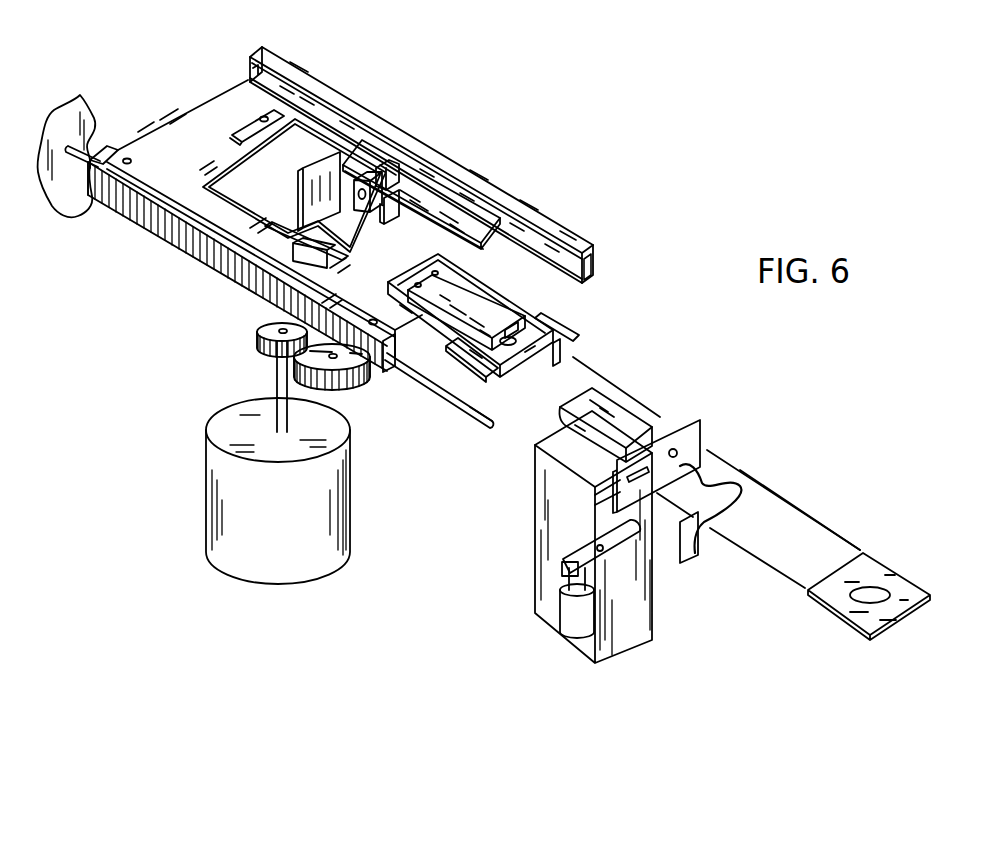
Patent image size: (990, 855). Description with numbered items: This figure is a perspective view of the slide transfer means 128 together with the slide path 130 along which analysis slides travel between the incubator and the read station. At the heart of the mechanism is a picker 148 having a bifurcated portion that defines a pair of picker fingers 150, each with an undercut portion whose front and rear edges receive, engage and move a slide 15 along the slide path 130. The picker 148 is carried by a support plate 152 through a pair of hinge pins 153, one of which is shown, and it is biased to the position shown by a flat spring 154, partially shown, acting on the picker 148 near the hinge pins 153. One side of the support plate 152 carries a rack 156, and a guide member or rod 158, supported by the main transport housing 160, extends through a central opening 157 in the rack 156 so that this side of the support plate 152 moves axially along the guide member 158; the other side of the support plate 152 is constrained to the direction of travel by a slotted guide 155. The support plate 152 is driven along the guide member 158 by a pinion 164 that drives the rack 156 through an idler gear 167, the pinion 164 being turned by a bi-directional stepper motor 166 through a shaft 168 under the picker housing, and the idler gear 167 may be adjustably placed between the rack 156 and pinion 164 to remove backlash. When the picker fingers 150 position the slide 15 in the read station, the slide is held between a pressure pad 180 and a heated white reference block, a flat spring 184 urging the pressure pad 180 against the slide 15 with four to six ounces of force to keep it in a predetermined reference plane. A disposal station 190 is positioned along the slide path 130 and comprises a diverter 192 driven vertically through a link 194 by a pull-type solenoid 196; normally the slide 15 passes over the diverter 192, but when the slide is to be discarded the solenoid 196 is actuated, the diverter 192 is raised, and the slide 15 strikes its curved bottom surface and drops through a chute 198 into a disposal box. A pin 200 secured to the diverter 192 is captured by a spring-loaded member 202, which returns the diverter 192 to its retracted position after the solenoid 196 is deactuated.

The slide 15 is at (475, 379).
The slide transfer means 128 is at (519, 159).
The slide path 130 is at (794, 527).
The picker 148 is at (307, 227).
The picker fingers 150 is at (520, 375).
The support plate 152 is at (484, 217).
The hinge pins 153 is at (362, 186).
The flat spring 154 is at (402, 165).
The slotted guide 155 is at (598, 268).
The rack 156 is at (219, 276).
The central opening 157 is at (452, 398).
The guide member 158 is at (471, 413).
The main transport housing 160 is at (84, 99).
The pinion 164 is at (258, 340).
The bi-directional stepper motor 166 is at (252, 560).
The idler gear 167 is at (346, 385).
The shaft 168 is at (276, 376).
The pressure pad 180 is at (540, 330).
The flat spring 184 is at (476, 301).
The disposal station 190 is at (707, 412).
The diverter 192 is at (621, 410).
The link 194 is at (621, 539).
The pull-type solenoid 196 is at (566, 624).
The chute 198 is at (539, 548).
The pin 200 is at (600, 496).
The spring-loaded member 202 is at (703, 442).